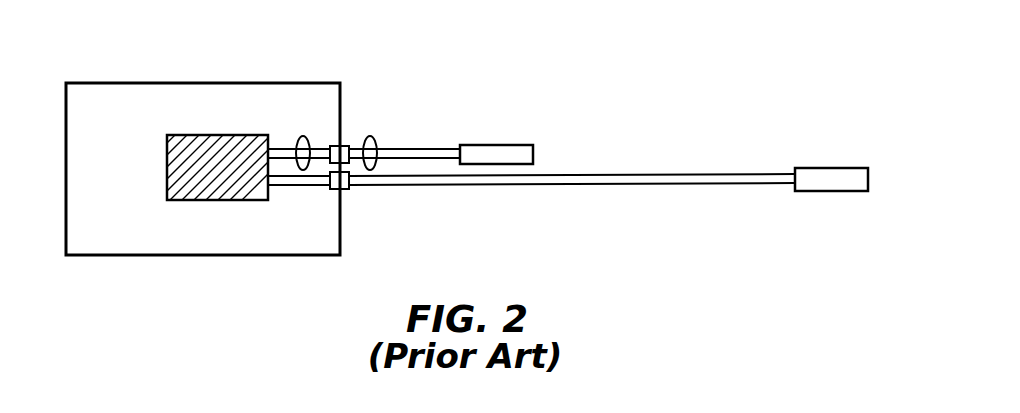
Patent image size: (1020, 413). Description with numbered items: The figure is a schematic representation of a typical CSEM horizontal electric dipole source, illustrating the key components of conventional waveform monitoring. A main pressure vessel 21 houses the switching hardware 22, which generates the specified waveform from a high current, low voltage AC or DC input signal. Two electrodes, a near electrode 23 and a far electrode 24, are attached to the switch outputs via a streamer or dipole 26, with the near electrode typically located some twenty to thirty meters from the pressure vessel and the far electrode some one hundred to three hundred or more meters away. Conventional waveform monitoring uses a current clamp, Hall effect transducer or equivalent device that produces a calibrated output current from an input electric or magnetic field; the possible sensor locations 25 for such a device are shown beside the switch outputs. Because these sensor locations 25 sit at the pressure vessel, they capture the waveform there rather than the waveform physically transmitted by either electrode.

The main pressure vessel 21 is at (303, 83).
The switching hardware 22 is at (203, 135).
The near electrode 23 is at (498, 145).
The far electrode 24 is at (828, 168).
The sensor locations 25 is at (282, 133).
The streamer or dipole 26 is at (405, 150).